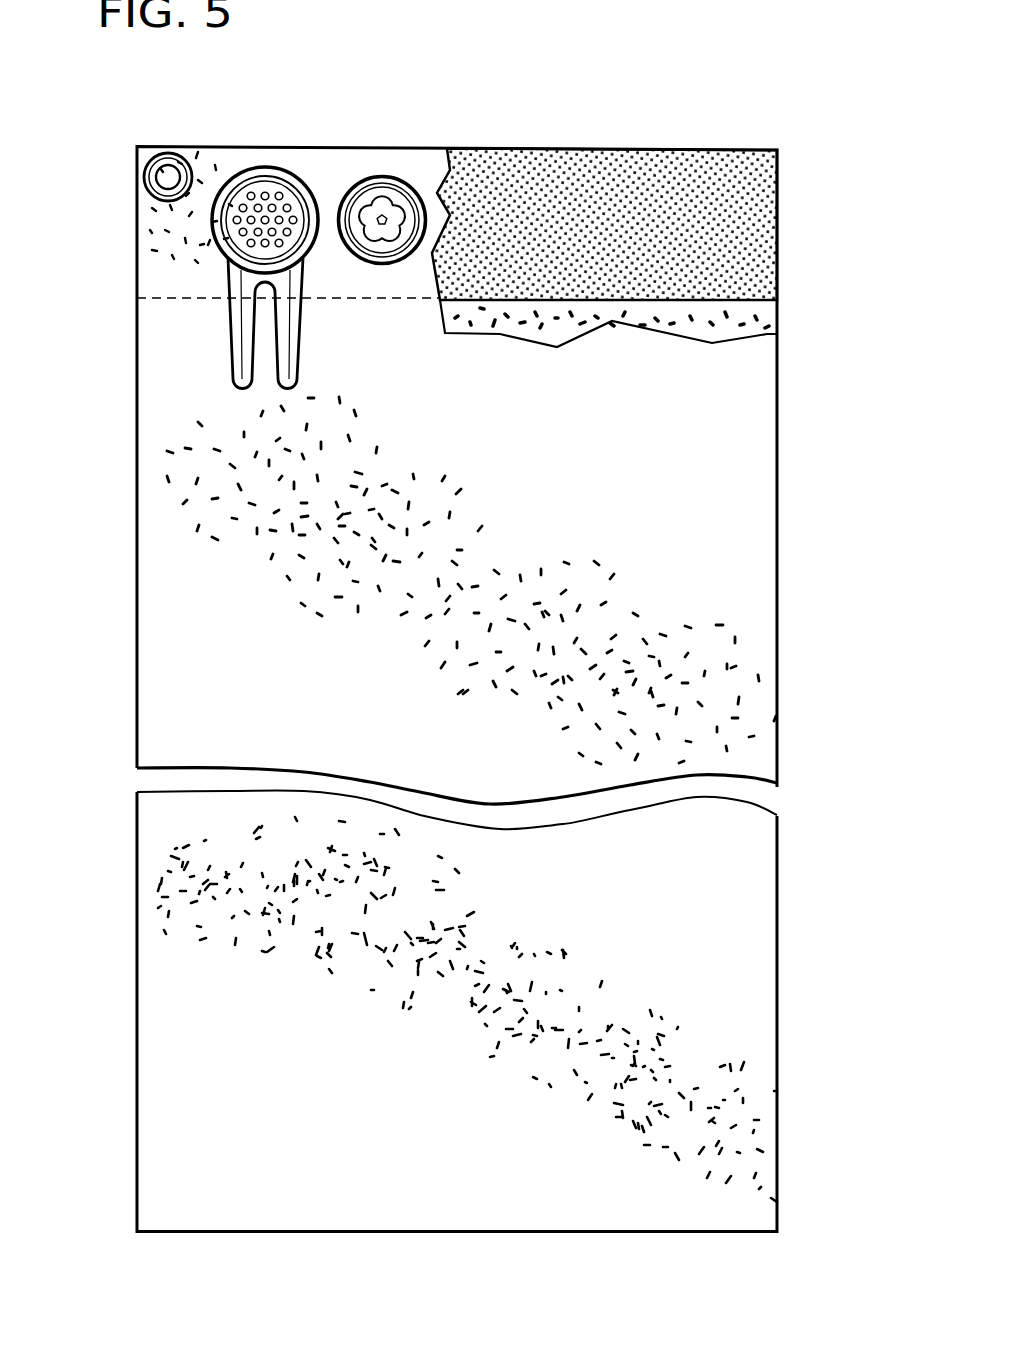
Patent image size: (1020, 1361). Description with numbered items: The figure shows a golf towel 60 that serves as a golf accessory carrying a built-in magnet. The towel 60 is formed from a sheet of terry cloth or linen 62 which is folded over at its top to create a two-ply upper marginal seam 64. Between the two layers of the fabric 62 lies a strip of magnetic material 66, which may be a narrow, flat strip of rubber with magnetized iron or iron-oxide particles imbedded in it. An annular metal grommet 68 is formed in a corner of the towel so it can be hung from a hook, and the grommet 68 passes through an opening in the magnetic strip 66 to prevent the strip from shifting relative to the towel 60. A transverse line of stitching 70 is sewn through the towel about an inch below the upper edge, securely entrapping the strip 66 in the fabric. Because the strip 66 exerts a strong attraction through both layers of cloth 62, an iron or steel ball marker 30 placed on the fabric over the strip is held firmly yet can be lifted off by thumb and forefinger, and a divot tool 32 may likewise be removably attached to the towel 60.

The ball marker 30 is at (380, 202).
The divot tool 32 is at (262, 190).
The golf towel 60 is at (800, 427).
The sheet of terry cloth or linen 62 is at (723, 517).
The two-ply upper marginal seam 64 is at (318, 159).
The strip of magnetic material 66 is at (602, 177).
The annular metal grommet 68 is at (163, 178).
The transverse line of stitching 70 is at (175, 298).